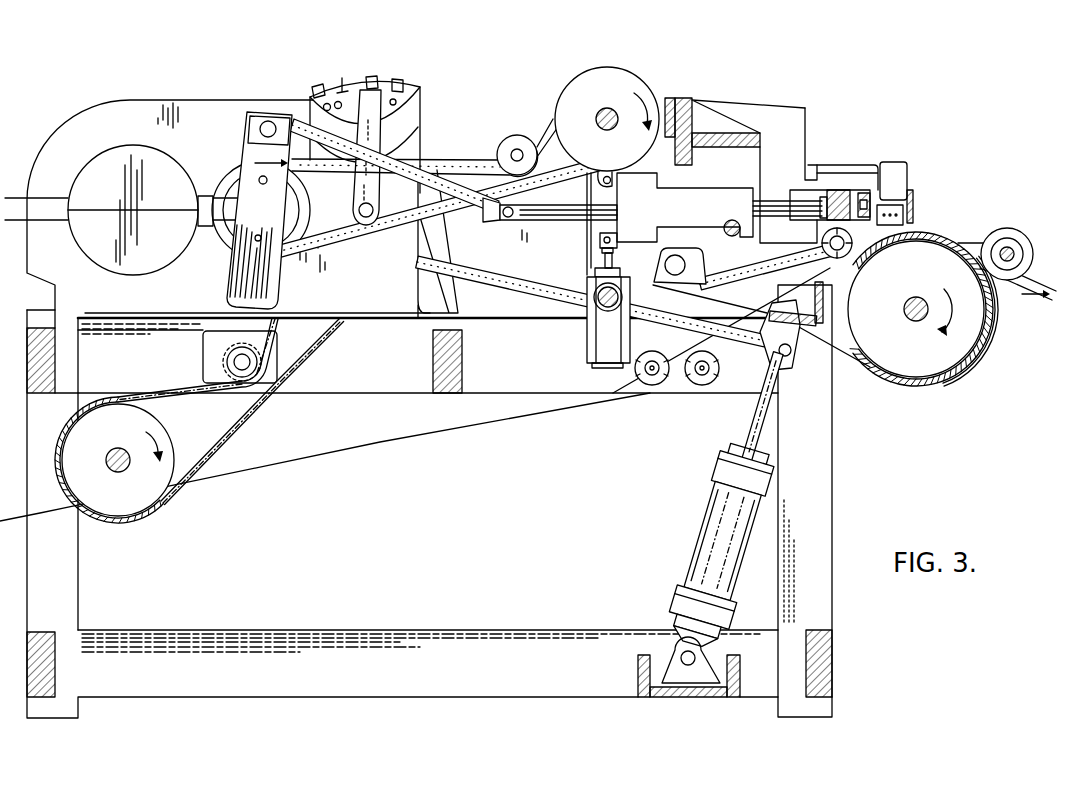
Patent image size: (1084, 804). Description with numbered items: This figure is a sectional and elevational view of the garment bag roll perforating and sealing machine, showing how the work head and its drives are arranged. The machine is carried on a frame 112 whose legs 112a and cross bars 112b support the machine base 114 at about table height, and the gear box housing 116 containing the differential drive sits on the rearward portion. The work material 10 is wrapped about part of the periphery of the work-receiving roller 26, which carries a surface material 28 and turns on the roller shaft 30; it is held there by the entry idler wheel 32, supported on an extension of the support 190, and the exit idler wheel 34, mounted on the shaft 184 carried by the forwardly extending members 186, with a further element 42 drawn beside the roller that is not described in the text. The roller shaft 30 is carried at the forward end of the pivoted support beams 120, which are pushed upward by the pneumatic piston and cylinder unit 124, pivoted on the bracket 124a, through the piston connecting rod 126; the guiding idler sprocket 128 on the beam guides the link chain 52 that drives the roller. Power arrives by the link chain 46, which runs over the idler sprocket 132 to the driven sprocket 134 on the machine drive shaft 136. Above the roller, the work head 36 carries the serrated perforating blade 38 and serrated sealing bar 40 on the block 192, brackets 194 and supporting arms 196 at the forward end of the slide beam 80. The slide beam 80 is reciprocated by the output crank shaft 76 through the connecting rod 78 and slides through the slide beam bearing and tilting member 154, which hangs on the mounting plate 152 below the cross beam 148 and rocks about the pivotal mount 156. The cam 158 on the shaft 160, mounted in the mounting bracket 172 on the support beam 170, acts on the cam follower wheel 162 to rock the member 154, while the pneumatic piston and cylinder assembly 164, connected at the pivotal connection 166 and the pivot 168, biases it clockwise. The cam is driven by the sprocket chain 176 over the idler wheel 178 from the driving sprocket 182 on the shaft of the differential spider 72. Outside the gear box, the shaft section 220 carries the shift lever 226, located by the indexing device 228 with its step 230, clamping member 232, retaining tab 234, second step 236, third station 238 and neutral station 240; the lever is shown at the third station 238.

The work material 10 is at (326, 456).
The work-receiving roller 26 is at (885, 402).
The surface material 28 is at (949, 387).
The roller shaft 30 is at (915, 297).
The idler wheel 32 is at (806, 272).
The idler wheel 34 is at (1022, 240).
The work head 36 is at (864, 140).
The serrated perforating blade 38 is at (912, 190).
The serrated sealing bar 40 is at (884, 205).
The guide shoe 42 is at (966, 376).
The link chain 46 is at (212, 455).
The link chain 52 is at (522, 288).
The differential spider 72 is at (257, 206).
The output crank shaft 76 is at (245, 152).
The connecting rod 78 is at (305, 118).
The slide beam 80 is at (558, 220).
The frame 112 is at (99, 720).
The legs 112a is at (74, 607).
The cross bars 112b is at (232, 631).
The machine base 114 is at (366, 390).
The gear box housing 116 is at (82, 112).
The support beams 120 is at (553, 270).
The pneumatic piston and cylinder unit 124 is at (706, 520).
The bracket 124a is at (670, 640).
The piston connecting rod 126 is at (750, 437).
The guiding idler sprocket 128 is at (692, 280).
The idler sprocket 132 is at (227, 362).
The driven sprocket 134 is at (148, 524).
The machine drive shaft 136 is at (124, 452).
The cross beam 148 is at (742, 130).
The mounting plate 152 is at (705, 172).
The slide beam bearing and tilting member 154 is at (683, 200).
The pivotal mount 156 is at (724, 232).
The cam 158 is at (610, 70).
The shaft 160 is at (607, 107).
The cam follower wheel 162 is at (605, 172).
The pneumatic piston and cylinder assembly 164 is at (590, 353).
The pivotal connection 166 is at (612, 240).
The pivot 168 is at (600, 304).
The support beam 170 is at (675, 98).
The mounting bracket 172 is at (692, 110).
The sprocket chain 176 is at (465, 160).
The idler wheel 178 is at (516, 135).
The driving sprocket 182 is at (220, 240).
The shaft 184 is at (1008, 210).
The forwardly extending members 186 is at (972, 243).
The support 190 is at (800, 107).
The block 192 is at (893, 162).
The brackets 194 is at (828, 166).
The supporting arms 196 is at (838, 190).
The shaft section 220 is at (372, 230).
The shift lever 226 is at (360, 225).
The indexing device 228 is at (450, 74).
The step 230 is at (318, 98).
The clamping member 232 is at (371, 76).
The retaining tab 234 is at (322, 88).
The second step 236 is at (344, 82).
The third station 238 is at (365, 144).
The neutral station 240 is at (422, 112).